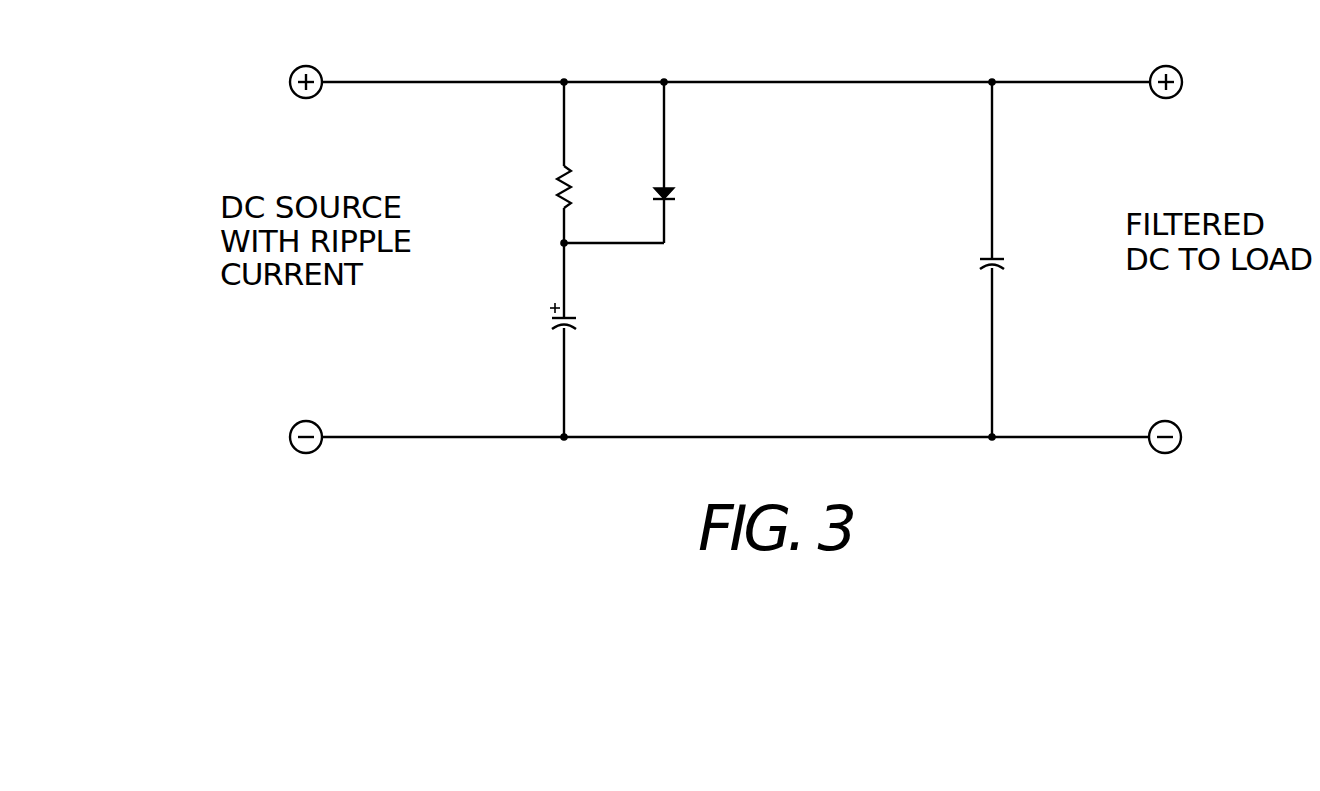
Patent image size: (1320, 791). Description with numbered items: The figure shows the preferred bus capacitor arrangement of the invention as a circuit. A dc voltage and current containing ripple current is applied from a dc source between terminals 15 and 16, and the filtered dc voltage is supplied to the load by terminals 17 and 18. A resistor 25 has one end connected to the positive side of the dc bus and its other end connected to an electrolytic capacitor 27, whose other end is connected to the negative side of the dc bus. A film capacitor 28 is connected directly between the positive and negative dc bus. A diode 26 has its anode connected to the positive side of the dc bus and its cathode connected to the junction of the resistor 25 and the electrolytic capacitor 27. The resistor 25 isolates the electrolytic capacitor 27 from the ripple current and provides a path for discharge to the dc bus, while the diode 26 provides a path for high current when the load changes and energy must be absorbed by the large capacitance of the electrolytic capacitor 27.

The terminal 15 is at (319, 72).
The terminal 16 is at (322, 429).
The terminal 17 is at (1179, 72).
The terminal 18 is at (1179, 429).
The resistor 25 is at (568, 172).
The diode 26 is at (675, 196).
The electrolytic capacitor 27 is at (566, 318).
The film capacitor 28 is at (995, 259).